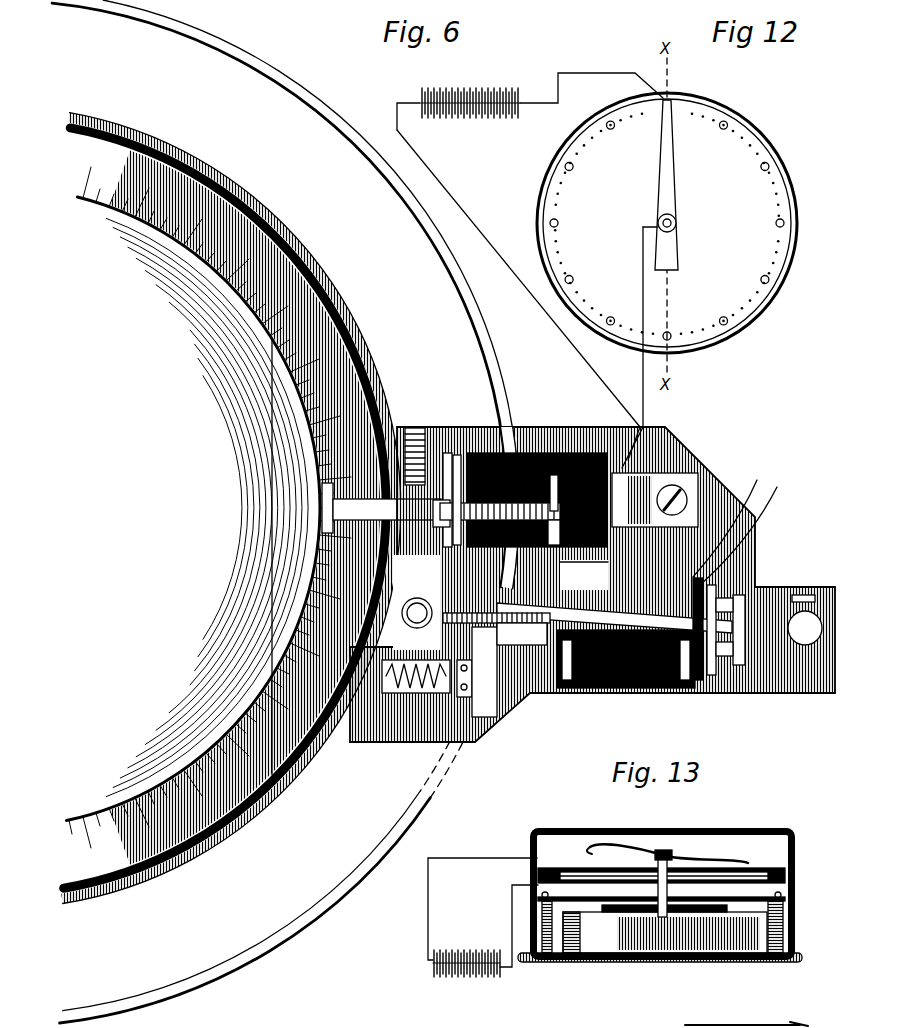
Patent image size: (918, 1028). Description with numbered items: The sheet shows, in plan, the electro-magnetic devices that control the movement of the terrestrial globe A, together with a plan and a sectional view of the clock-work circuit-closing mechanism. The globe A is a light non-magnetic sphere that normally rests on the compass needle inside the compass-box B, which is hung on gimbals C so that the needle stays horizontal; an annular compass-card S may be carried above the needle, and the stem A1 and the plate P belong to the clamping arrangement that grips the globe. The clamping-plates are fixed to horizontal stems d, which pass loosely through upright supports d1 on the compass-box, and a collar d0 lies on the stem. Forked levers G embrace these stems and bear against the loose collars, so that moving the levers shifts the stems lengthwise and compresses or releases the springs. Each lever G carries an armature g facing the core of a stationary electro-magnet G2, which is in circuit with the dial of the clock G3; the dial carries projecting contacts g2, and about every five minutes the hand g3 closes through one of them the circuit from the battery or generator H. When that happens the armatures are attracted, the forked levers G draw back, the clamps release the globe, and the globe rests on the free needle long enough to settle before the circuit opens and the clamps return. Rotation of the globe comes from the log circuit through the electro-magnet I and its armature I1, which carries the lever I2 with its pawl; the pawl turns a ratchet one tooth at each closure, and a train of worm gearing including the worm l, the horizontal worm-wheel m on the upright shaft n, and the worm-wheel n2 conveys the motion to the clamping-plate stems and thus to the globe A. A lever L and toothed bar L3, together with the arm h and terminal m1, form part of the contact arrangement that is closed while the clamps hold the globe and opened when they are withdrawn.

In FIG. 6, the terrestrial globe A is at (207, 507).
In FIG. 6, the shaft A1 is at (378, 522).
In FIG. 6, the compass-box B is at (276, 822).
In FIG. 6, the gimbals C is at (366, 846).
In FIG. 6, the pointer plate P is at (245, 507).
In FIG. 6, the annular compass-card S is at (209, 507).
In FIG. 6, the forked levers G is at (592, 584).
In FIG. 6, the stationary electro-magnet G2 is at (548, 465).
In FIG. 12, the clock G3 is at (795, 258).
In FIG. 13, the clock G3 is at (795, 887).
In FIG. 6, the bracket g is at (454, 495).
In FIG. 12, the projecting contacts g2 is at (784, 223).
In FIG. 13, the projecting contacts g2 is at (568, 850).
In FIG. 12, the hand g3 is at (678, 187).
In FIG. 13, the hand g3 is at (667, 880).
In FIG. 6, the upright shaft n is at (417, 613).
In FIG. 6, the worm-wheel n2 is at (418, 428).
In FIG. 6, the horizontal worm-wheel m is at (416, 665).
In FIG. 6, the terminal m1 is at (545, 509).
In FIG. 6, the contact arm h is at (560, 480).
In FIG. 6, the horizontal rods or stems d is at (520, 521).
In FIG. 6, the shaft collar d0 is at (478, 562).
In FIG. 6, the upright supports d1 is at (584, 571).
In FIG. 6, the lever plate L is at (464, 680).
In FIG. 6, the toothed bar L3 is at (496, 630).
In FIG. 6, the worm l is at (542, 650).
In FIG. 6, the electro-magnet I is at (626, 659).
In FIG. 6, the armature I1 is at (710, 690).
In FIG. 6, the lever I2 is at (621, 629).
In FIG. 6, the battery or generator H is at (505, 82).
In FIG. 13, the battery or generator H is at (490, 1005).